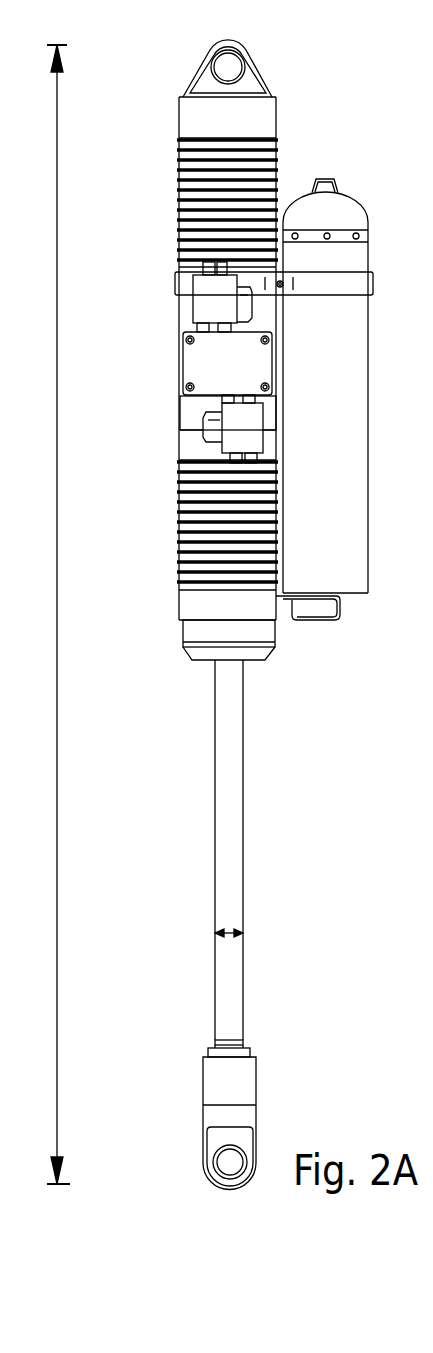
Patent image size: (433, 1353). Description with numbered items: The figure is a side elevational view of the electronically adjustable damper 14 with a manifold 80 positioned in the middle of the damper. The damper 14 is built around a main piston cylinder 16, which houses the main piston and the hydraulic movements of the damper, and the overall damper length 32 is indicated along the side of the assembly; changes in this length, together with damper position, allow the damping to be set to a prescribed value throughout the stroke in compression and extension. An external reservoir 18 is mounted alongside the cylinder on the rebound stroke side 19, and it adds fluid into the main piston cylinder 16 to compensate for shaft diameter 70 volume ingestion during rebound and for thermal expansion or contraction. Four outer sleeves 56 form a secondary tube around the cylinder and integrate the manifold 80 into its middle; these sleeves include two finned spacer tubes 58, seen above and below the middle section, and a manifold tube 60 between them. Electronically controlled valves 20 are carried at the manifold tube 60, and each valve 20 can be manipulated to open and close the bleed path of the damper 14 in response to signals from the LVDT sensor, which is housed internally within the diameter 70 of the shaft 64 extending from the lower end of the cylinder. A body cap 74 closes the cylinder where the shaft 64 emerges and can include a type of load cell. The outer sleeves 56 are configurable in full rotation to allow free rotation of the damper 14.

The electronically adjustable damper 14 is at (137, 72).
The main piston cylinder 16 is at (300, 143).
The external reservoir 18 is at (345, 378).
The rebound stroke side 19 is at (150, 646).
The electronically controlled valve 20 is at (205, 303).
The damper length 32 is at (58, 128).
The outer sleeves 56 is at (298, 73).
The spacer tubes 58 is at (205, 213).
The manifold tube 60 is at (190, 413).
The shaft 64 is at (228, 770).
The shaft diameter 70 is at (232, 930).
The body cap 74 is at (263, 690).
The manifold 80 is at (158, 342).